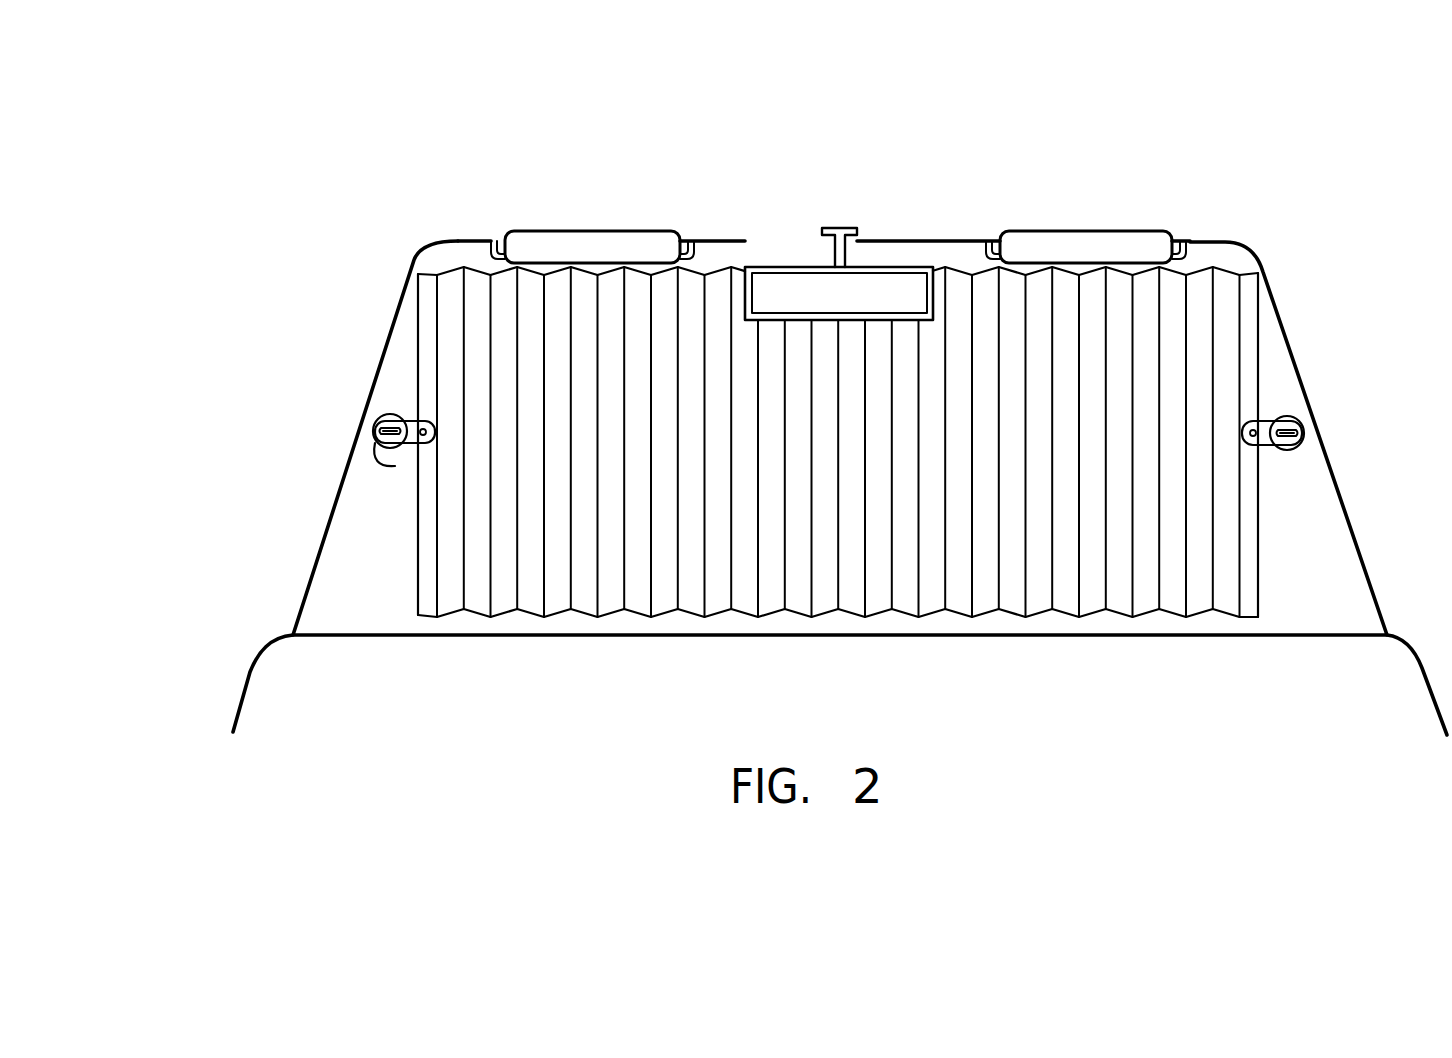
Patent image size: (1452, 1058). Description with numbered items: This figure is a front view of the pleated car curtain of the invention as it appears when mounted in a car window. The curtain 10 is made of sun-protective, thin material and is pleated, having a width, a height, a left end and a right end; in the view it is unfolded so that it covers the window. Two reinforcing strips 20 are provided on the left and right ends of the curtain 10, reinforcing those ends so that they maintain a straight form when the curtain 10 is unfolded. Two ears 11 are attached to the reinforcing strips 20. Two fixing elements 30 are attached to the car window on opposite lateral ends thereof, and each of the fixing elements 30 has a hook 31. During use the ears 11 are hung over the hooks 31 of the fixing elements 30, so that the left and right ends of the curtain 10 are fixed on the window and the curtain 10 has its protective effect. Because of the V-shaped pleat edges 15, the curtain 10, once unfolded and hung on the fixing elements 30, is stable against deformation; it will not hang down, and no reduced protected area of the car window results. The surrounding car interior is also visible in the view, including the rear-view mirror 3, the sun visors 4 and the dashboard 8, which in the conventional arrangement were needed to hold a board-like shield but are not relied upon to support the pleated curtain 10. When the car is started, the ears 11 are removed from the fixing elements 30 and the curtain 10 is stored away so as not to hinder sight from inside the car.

The rear-view mirror 3 is at (880, 298).
The sun visors 4 is at (587, 255).
The dashboard 8 is at (288, 685).
The curtain 10 is at (457, 418).
The ears 11 is at (408, 451).
The V-shaped pleat edges 15 is at (517, 355).
The reinforcing strips 20 is at (725, 417).
The fixing elements 30 is at (734, 345).
The hook 31 is at (373, 428).